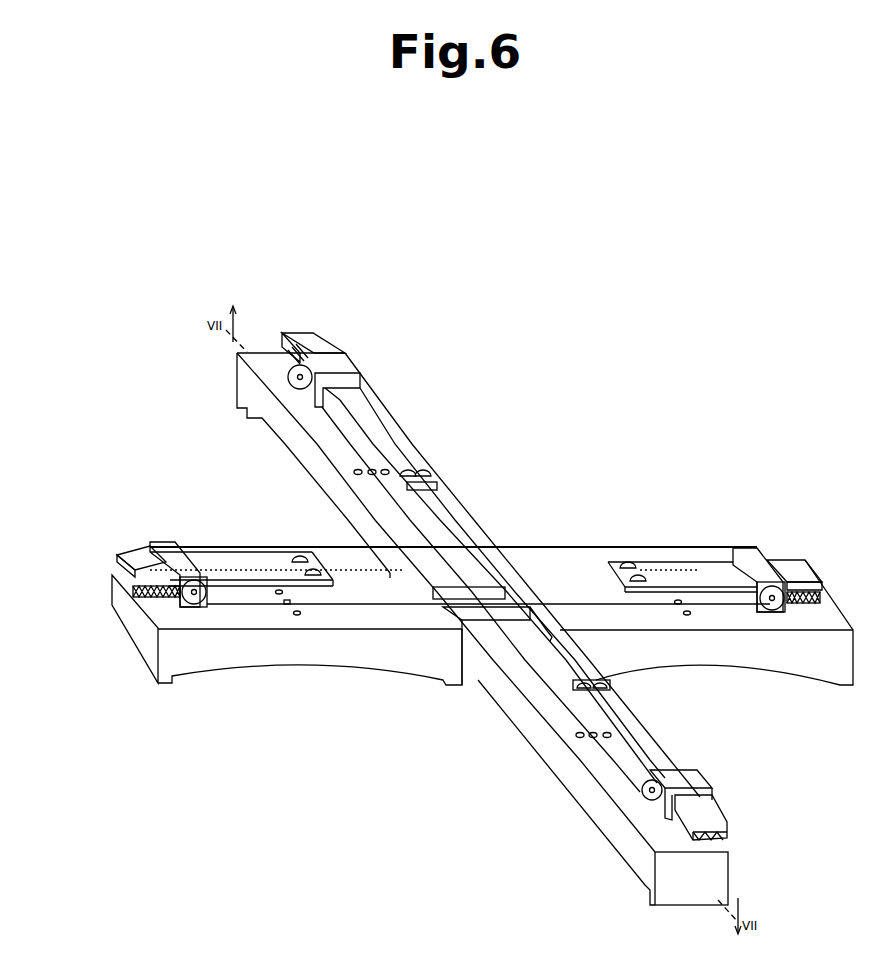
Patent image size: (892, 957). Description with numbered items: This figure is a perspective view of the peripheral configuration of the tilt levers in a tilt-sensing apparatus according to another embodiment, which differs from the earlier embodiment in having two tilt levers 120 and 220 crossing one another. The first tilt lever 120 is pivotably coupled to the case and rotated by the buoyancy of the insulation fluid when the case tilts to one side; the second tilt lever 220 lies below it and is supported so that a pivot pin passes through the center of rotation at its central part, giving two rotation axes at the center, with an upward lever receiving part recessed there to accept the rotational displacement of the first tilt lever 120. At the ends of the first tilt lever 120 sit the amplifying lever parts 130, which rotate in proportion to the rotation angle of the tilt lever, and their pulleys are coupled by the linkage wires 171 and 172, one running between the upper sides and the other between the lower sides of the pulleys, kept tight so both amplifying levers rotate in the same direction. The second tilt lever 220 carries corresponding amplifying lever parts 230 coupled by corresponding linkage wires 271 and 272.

The tilt lever 120 is at (130, 637).
The first amplifying lever part 130 is at (222, 563).
The linkage wire 171 is at (581, 547).
The linkage wire 172 is at (385, 606).
The second tilt lever 220 is at (438, 515).
The amplifying lever part 230 is at (392, 440).
The linkage wire 271 is at (520, 655).
The linkage wire 272 is at (555, 610).